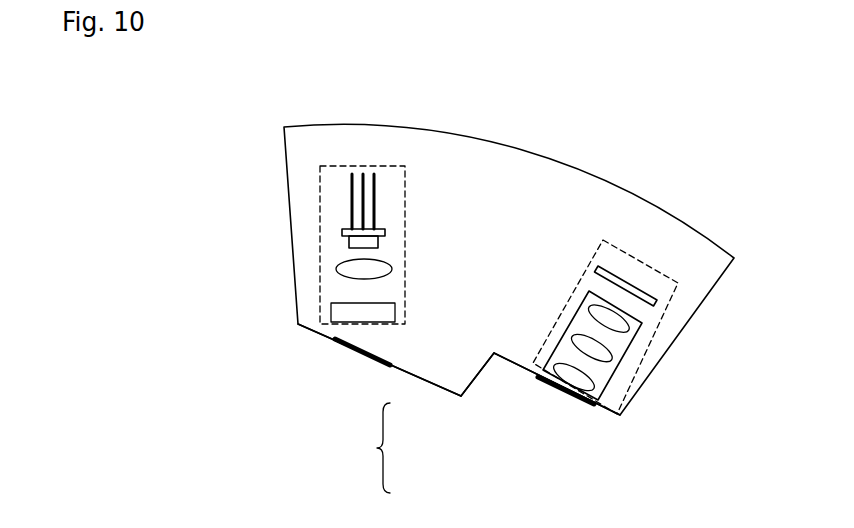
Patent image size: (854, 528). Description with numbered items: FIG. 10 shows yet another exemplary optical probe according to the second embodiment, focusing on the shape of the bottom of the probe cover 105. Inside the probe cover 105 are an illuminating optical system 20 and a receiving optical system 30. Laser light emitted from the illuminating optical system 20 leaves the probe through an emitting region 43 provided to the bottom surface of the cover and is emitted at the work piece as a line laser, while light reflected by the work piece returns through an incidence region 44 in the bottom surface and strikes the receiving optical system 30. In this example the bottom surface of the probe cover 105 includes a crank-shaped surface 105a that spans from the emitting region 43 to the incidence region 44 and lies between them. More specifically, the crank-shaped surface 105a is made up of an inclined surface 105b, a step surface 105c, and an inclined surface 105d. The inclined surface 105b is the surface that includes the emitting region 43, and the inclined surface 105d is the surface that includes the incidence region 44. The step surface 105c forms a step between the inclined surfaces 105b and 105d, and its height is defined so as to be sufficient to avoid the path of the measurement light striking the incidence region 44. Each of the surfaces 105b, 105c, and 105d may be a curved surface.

The illuminating optical system 20 is at (363, 166).
The receiving optical system 30 is at (645, 264).
The emitting region 43 is at (352, 349).
The incidence region 44 is at (567, 398).
The probe cover 105 is at (583, 166).
The crank-shaped surface 105a is at (351, 448).
The inclined surface 105b is at (418, 369).
The step surface 105c is at (478, 377).
The inclined surface 105d is at (518, 370).